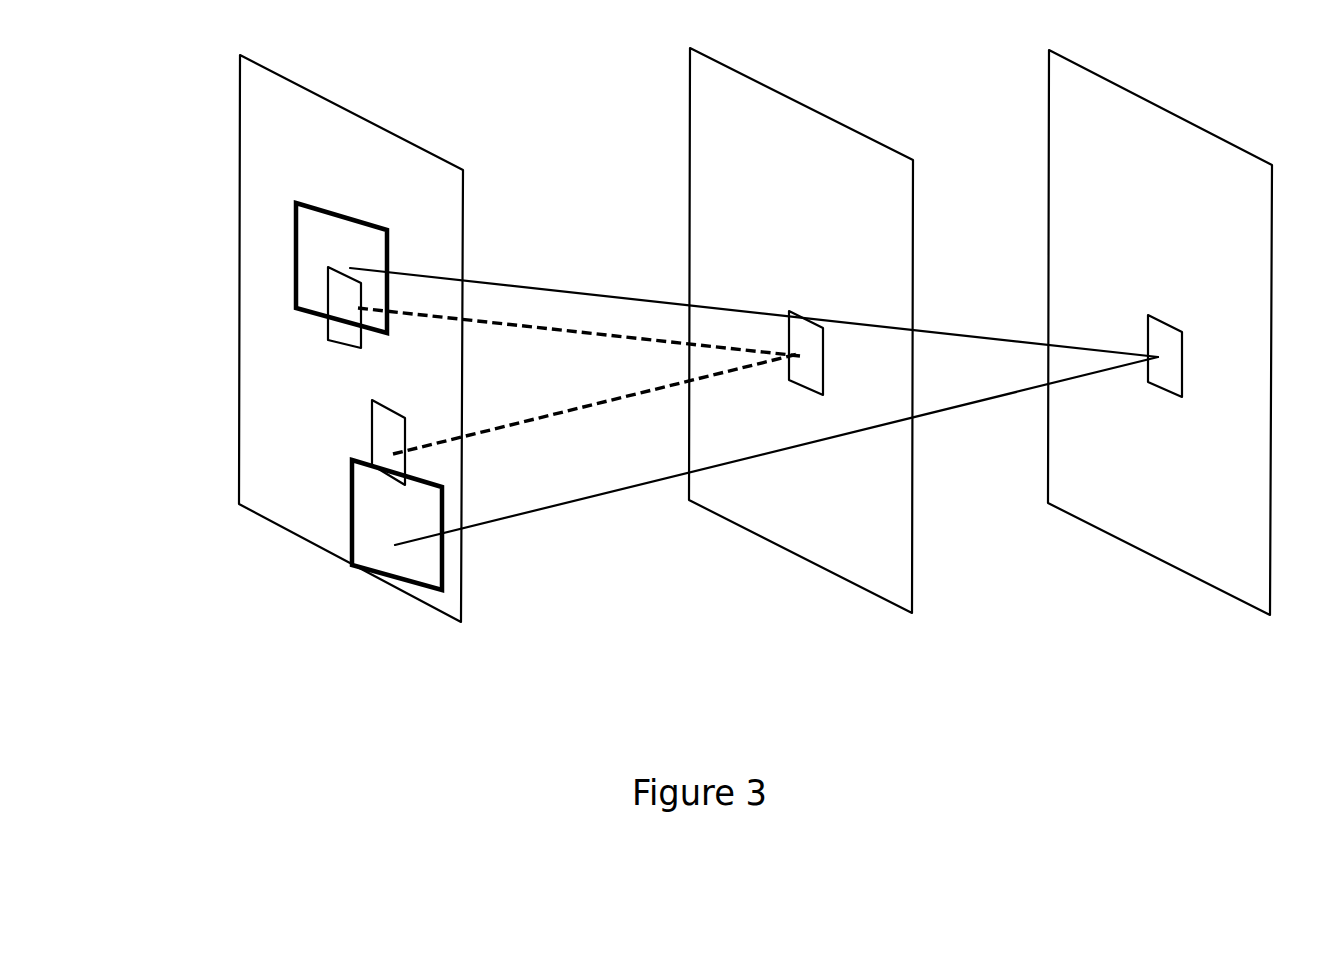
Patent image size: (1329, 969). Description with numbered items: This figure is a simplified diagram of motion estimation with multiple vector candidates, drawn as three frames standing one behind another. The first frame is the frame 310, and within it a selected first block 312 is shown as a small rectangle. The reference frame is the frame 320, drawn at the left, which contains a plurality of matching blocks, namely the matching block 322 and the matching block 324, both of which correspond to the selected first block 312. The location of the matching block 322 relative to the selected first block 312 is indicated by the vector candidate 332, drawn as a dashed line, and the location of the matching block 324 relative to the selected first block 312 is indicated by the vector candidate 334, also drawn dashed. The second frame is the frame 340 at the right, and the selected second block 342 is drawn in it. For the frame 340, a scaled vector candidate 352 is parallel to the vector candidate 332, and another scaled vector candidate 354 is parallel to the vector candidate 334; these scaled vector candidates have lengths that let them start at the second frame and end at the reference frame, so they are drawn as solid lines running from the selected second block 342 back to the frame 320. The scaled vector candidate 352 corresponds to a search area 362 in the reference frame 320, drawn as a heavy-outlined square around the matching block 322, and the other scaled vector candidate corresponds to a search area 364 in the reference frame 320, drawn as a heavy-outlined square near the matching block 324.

The frame 310 is at (873, 141).
The block 312 is at (805, 388).
The frame 320 is at (437, 155).
The matching block 322 is at (346, 343).
The matching block 324 is at (373, 432).
The vector candidate 332 is at (579, 344).
The vector candidate 334 is at (595, 404).
The frame 340 is at (1237, 147).
The block 342 is at (1165, 390).
The scaled vector candidate 352 is at (647, 300).
The scaled vector candidate 354 is at (600, 496).
The search area 362 is at (296, 253).
The search area 364 is at (459, 560).